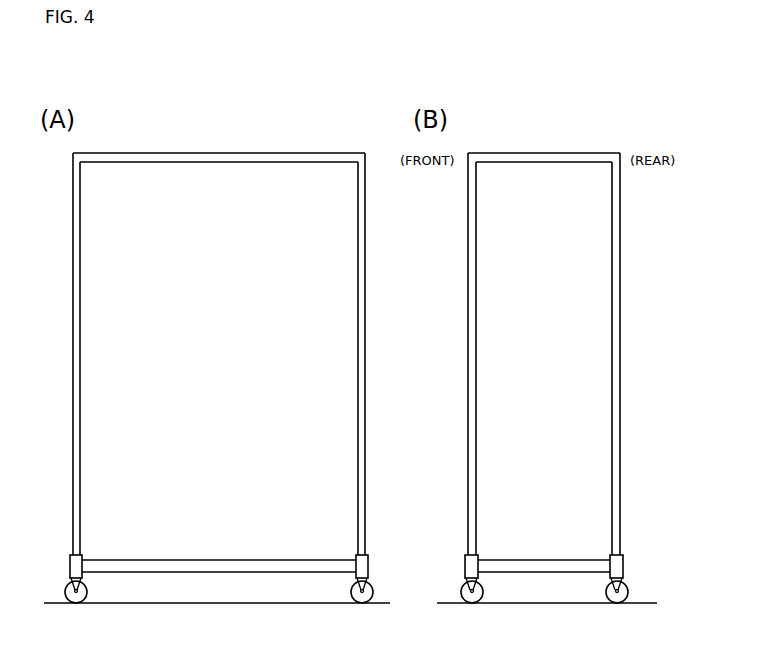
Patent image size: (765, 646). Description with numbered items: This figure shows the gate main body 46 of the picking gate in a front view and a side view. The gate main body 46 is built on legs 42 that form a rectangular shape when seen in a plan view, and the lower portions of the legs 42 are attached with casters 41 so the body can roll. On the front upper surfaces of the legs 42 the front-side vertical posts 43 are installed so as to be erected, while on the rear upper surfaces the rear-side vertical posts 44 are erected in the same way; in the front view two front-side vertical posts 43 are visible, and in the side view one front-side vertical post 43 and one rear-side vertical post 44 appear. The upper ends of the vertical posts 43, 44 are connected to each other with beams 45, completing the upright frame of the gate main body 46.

The caster 41 is at (67, 587).
The leg 42 is at (222, 560).
The front-side vertical post 43 is at (73, 325).
The rear-side vertical post 44 is at (620, 380).
The beam 45 is at (220, 153).
The gate main body 46 is at (278, 143).